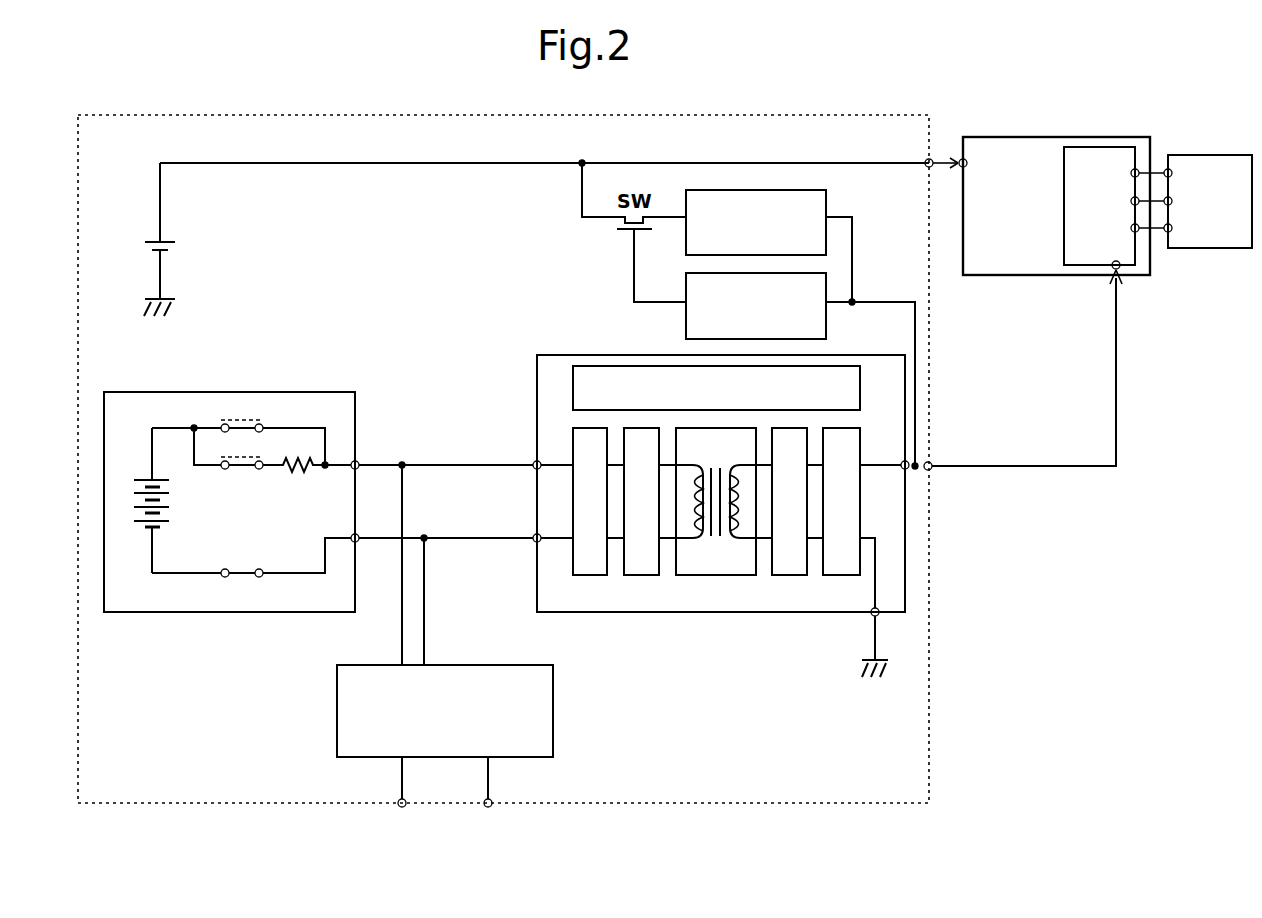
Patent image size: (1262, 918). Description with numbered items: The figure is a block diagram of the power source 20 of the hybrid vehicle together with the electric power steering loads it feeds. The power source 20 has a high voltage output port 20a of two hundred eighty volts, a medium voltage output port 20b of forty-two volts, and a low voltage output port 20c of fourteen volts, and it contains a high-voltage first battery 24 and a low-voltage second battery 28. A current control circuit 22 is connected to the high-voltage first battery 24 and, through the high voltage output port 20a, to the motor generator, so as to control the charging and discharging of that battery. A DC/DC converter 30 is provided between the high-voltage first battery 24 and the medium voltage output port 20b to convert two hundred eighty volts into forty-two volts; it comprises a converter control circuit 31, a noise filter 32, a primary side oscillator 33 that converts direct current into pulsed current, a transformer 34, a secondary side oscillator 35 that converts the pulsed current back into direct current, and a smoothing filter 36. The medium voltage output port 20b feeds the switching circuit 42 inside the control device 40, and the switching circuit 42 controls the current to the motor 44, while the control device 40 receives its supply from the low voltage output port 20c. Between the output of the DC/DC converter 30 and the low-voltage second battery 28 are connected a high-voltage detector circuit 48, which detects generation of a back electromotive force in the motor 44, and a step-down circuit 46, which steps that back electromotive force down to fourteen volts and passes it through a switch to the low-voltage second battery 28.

The power source 20 is at (138, 116).
The high voltage output port 20a is at (492, 800).
The medium voltage output port 20b is at (931, 461).
The low voltage output port 20c is at (931, 158).
The current control circuit 22 is at (545, 665).
The high-voltage first battery 24 is at (228, 392).
The low-voltage second battery 28 is at (165, 242).
The DC/DC converter 30 is at (721, 516).
The converter control circuit 31 is at (861, 382).
The noise filter 32 is at (578, 577).
The primary side oscillator 33 is at (638, 577).
The transformer 34 is at (712, 577).
The secondary side oscillator 35 is at (792, 577).
The smoothing filter 36 is at (841, 577).
The control device 40 is at (1043, 137).
The switching circuit 42 is at (1100, 147).
The motor 44 is at (1183, 155).
The step-down circuit 46 is at (828, 192).
The high-voltage detector circuit 48 is at (828, 330).